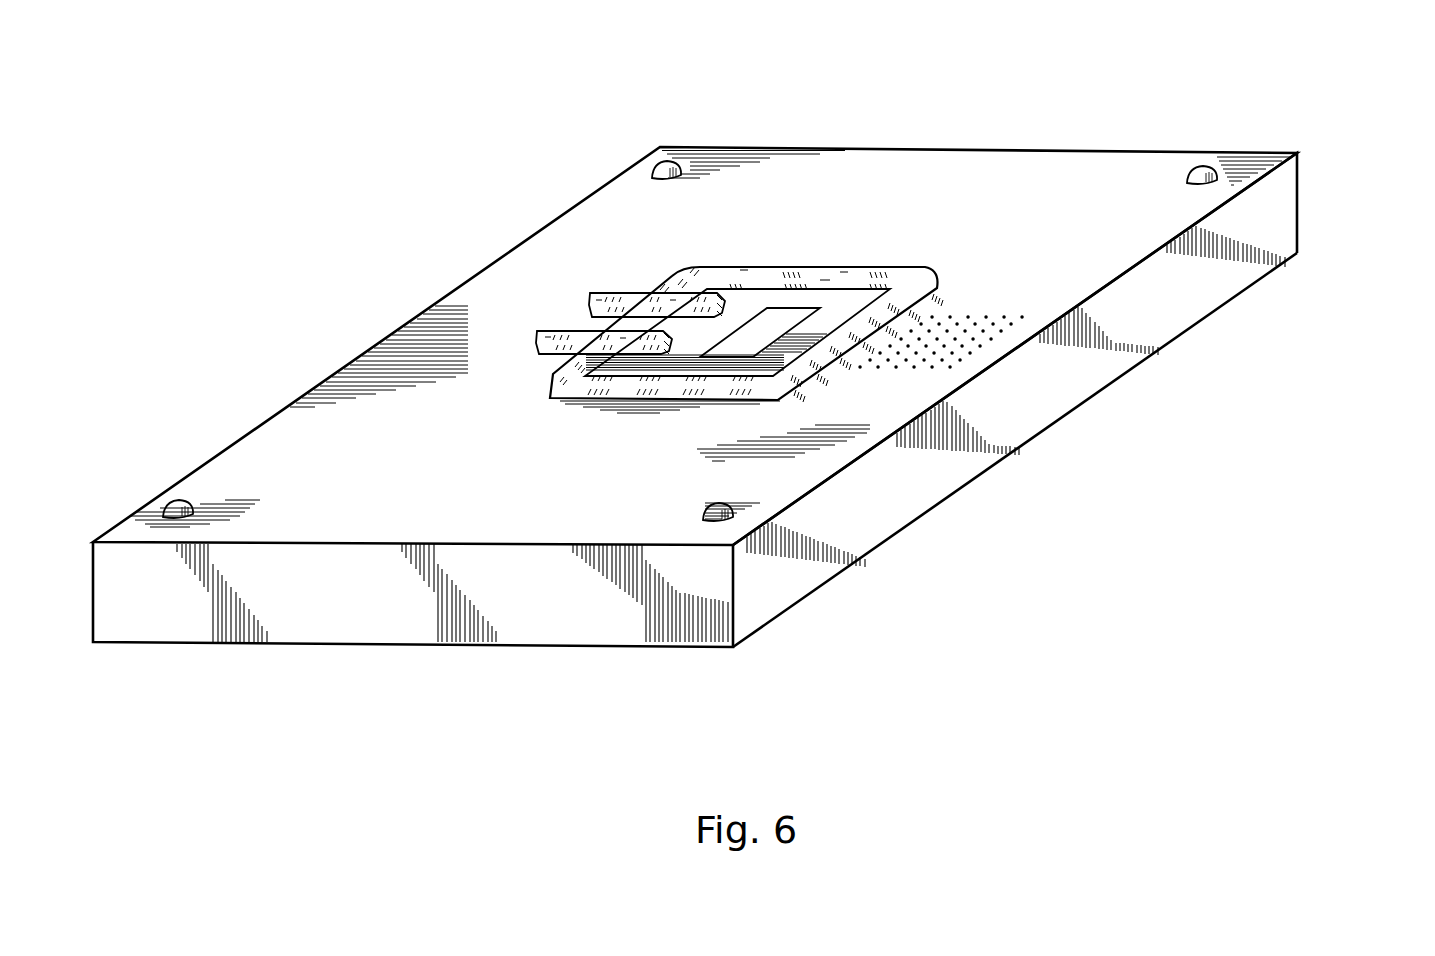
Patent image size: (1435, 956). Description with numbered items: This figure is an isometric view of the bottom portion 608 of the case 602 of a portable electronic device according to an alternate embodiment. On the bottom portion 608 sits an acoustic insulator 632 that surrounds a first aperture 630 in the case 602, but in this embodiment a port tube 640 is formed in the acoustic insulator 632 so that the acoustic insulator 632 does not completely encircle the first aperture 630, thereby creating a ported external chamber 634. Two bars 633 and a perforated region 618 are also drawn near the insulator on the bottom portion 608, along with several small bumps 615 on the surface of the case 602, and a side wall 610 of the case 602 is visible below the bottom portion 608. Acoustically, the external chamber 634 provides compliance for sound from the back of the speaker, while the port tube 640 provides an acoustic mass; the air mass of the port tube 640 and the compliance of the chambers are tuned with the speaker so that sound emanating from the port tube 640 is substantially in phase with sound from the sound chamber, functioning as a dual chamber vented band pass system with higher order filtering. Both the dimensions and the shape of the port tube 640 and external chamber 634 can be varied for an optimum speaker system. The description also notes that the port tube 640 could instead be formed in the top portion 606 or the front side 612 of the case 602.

The case 602 is at (747, 401).
The top portion 606 is at (607, 645).
The bottom portion 608 is at (947, 172).
The side wall 610 is at (913, 395).
The front side 612 is at (897, 510).
The support bumps 615 is at (665, 166).
The perforations / sound port 618 is at (977, 322).
The first aperture 630 is at (777, 318).
The acoustic insulator 632 is at (760, 272).
The guide bars 633 is at (590, 298).
The external chamber 634 is at (750, 303).
The port tube 640 is at (638, 322).